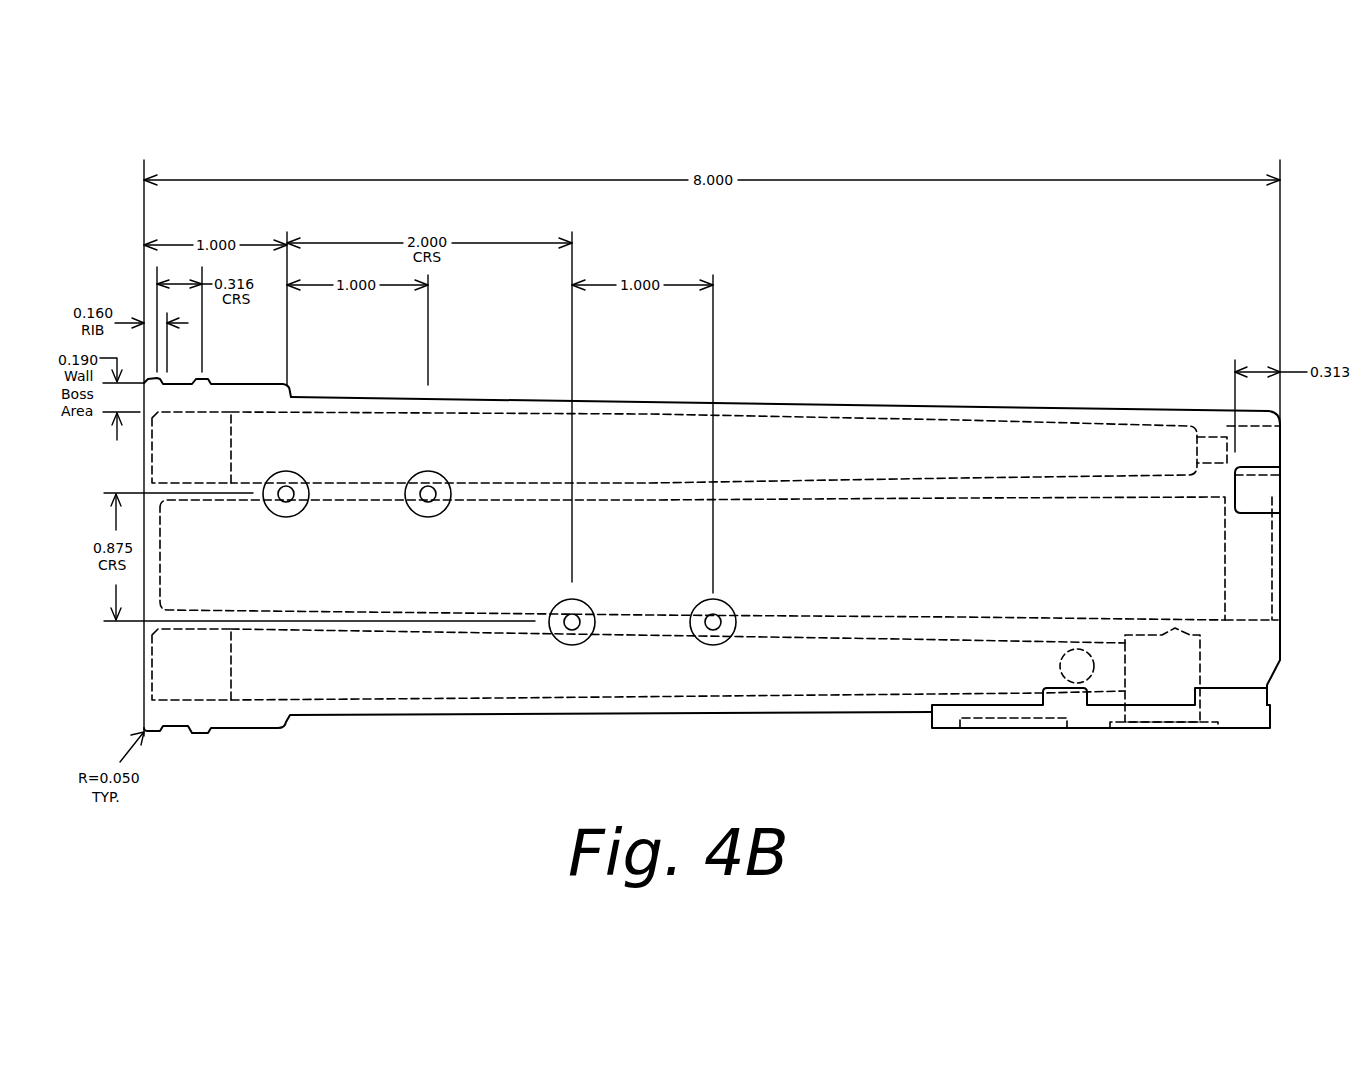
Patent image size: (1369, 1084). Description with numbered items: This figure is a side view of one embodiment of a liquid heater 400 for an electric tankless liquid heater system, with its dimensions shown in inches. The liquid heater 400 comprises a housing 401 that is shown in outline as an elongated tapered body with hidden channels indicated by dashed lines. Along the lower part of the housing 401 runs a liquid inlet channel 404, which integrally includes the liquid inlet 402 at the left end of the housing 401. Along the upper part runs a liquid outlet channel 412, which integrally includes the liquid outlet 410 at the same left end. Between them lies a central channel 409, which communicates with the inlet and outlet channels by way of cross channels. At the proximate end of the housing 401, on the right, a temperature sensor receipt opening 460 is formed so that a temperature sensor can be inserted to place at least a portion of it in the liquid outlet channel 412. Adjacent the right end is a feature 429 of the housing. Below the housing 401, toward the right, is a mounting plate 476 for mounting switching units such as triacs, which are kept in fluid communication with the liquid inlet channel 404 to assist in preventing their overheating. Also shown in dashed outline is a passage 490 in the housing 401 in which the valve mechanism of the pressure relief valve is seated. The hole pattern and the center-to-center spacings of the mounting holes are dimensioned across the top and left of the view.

The liquid heater 400 is at (967, 330).
The housing 401 is at (758, 401).
The liquid inlet 402 is at (195, 665).
The liquid inlet channel 404 is at (637, 686).
The central channel 409 is at (637, 571).
The liquid outlet 410 is at (190, 447).
The liquid outlet channel 412 is at (637, 466).
The end recess 429 is at (1238, 620).
The temperature sensor receipt opening 460 is at (1255, 447).
The mounting plate 476 is at (1267, 718).
The passage 490 is at (1073, 658).